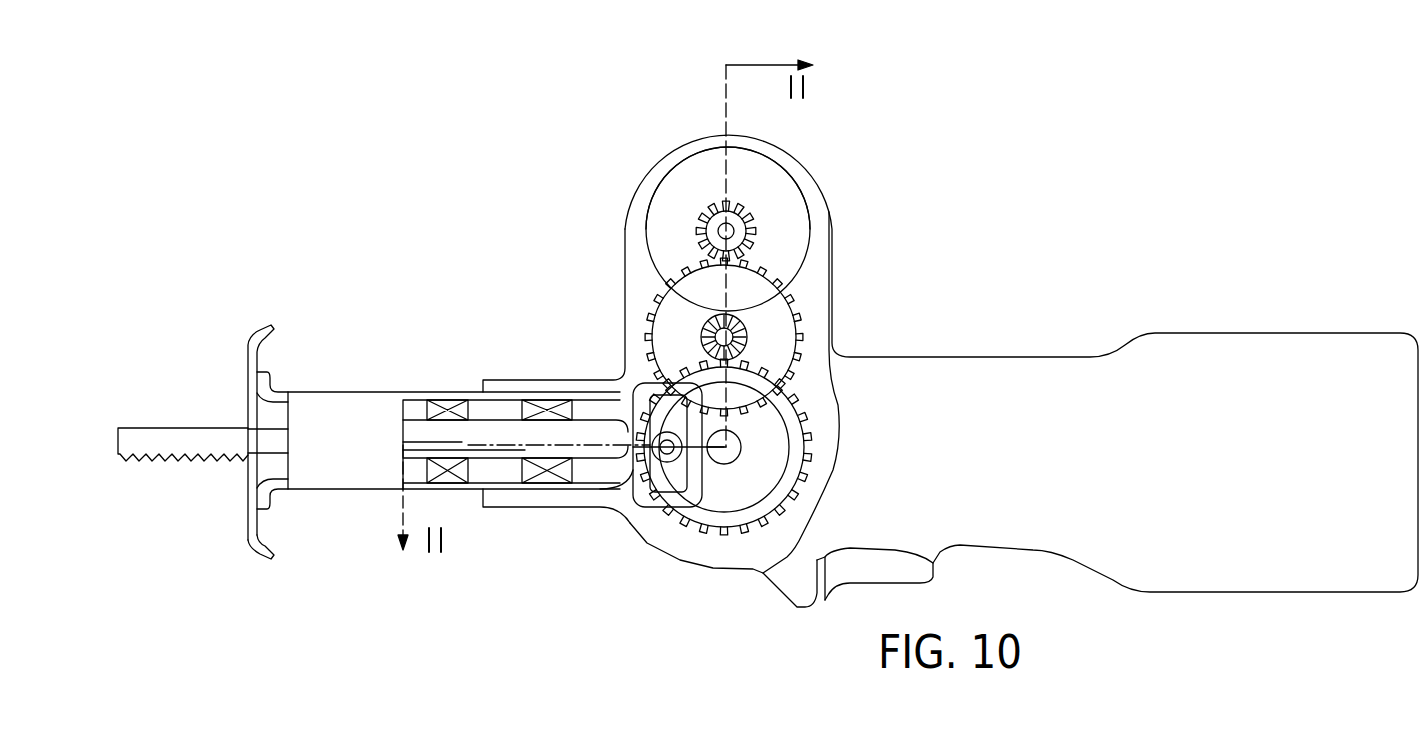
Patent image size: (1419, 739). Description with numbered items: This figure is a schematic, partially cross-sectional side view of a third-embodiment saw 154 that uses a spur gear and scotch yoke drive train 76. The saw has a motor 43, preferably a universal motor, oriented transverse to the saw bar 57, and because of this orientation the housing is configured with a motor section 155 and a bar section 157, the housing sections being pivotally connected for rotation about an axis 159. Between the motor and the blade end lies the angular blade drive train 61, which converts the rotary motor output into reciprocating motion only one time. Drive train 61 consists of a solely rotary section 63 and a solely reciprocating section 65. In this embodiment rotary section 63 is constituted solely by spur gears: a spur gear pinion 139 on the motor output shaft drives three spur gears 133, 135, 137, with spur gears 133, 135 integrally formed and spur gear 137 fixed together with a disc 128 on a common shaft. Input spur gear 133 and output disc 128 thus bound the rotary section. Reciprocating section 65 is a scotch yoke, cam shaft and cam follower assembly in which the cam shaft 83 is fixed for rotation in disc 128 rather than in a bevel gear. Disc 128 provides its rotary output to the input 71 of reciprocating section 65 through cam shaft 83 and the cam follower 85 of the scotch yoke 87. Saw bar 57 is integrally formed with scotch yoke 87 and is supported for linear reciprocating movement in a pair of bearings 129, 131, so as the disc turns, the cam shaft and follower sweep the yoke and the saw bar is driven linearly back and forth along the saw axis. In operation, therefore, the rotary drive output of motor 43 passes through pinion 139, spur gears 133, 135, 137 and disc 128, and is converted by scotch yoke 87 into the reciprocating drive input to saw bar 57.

The motor 43 is at (700, 168).
The saw bar 57 is at (505, 450).
The angular blade drive train 61 is at (905, 180).
The rotary section 63 is at (638, 283).
The reciprocating section 65 is at (527, 536).
The input of reciprocating section 71 is at (622, 437).
The spur gear and scotch yoke drive train 76 is at (857, 274).
The cam shaft 83 is at (625, 362).
The cam follower 85 is at (655, 492).
The scotch yoke 87 is at (633, 478).
The disc 128 is at (805, 455).
The bearing 129 is at (450, 405).
The bearing 131 is at (545, 405).
The spur gear 133 is at (803, 327).
The spur gear 135 is at (742, 342).
The spur gear 137 is at (800, 438).
The spur gear pinion 139 is at (695, 228).
The saw 154 is at (534, 216).
The motor section 155 is at (820, 207).
The bar section 157 is at (330, 410).
The axis 159 is at (738, 452).